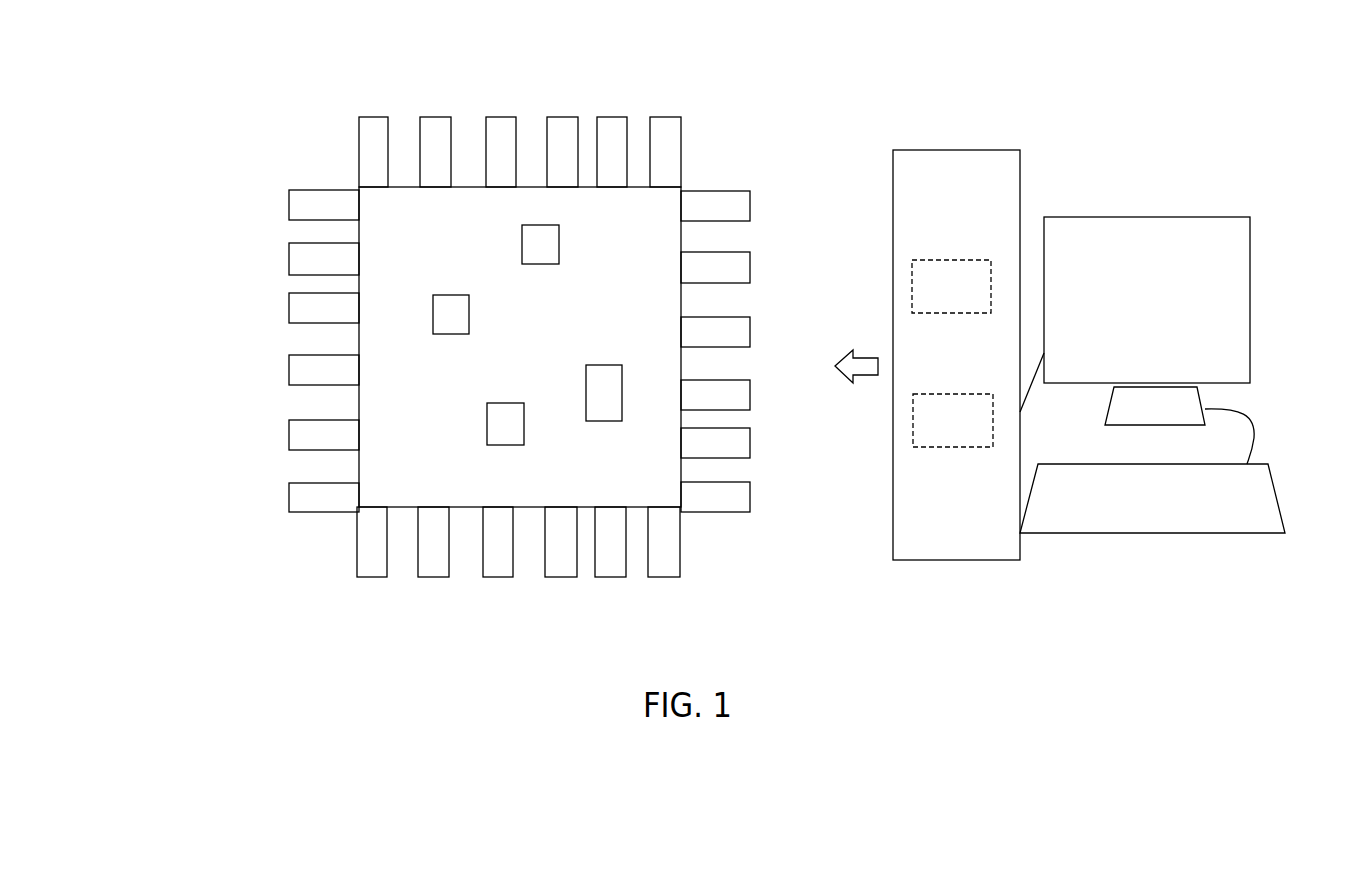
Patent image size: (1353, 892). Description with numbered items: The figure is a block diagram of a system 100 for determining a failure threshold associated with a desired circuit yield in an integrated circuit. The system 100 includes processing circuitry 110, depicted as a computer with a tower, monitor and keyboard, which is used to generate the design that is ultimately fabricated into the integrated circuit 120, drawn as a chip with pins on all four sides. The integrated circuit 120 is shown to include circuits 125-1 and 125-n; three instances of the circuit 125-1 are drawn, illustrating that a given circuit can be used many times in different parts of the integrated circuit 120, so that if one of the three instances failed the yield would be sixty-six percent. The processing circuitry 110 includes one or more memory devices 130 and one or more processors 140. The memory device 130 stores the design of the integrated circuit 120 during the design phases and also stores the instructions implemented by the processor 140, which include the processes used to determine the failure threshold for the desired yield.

The system 100 is at (1071, 98).
The processing circuitry 110 is at (1148, 170).
The integrated circuit 120 is at (436, 240).
The circuit 125-1 is at (508, 254).
The circuit 125-n is at (601, 355).
The memory device 130 is at (951, 286).
The processor 140 is at (953, 420).